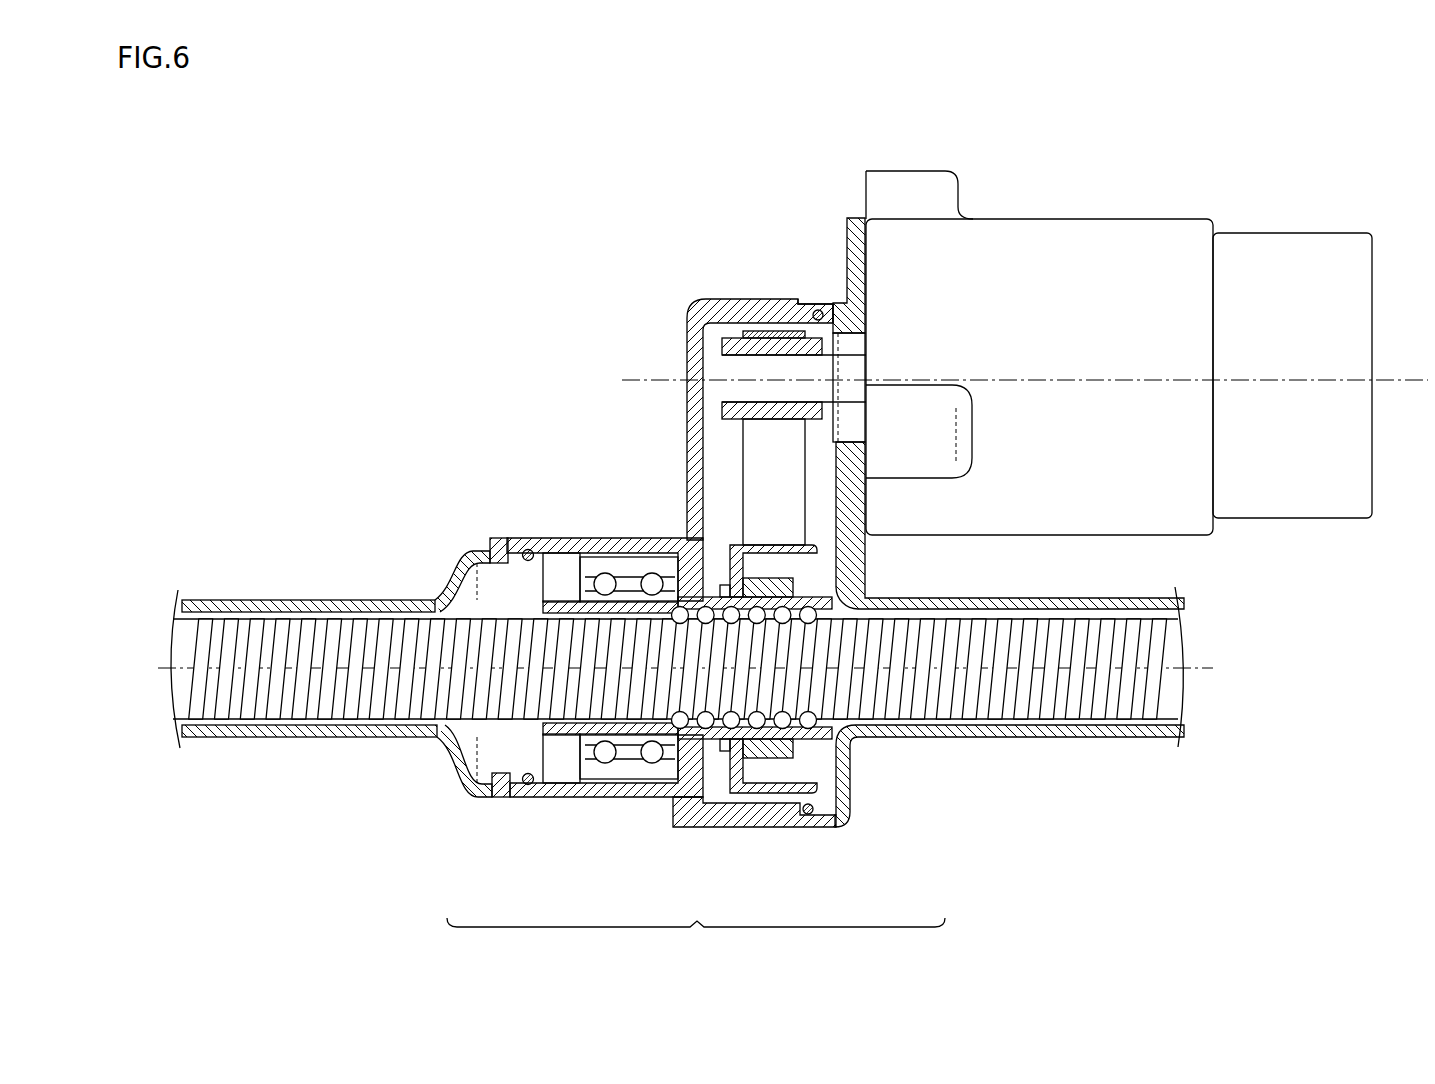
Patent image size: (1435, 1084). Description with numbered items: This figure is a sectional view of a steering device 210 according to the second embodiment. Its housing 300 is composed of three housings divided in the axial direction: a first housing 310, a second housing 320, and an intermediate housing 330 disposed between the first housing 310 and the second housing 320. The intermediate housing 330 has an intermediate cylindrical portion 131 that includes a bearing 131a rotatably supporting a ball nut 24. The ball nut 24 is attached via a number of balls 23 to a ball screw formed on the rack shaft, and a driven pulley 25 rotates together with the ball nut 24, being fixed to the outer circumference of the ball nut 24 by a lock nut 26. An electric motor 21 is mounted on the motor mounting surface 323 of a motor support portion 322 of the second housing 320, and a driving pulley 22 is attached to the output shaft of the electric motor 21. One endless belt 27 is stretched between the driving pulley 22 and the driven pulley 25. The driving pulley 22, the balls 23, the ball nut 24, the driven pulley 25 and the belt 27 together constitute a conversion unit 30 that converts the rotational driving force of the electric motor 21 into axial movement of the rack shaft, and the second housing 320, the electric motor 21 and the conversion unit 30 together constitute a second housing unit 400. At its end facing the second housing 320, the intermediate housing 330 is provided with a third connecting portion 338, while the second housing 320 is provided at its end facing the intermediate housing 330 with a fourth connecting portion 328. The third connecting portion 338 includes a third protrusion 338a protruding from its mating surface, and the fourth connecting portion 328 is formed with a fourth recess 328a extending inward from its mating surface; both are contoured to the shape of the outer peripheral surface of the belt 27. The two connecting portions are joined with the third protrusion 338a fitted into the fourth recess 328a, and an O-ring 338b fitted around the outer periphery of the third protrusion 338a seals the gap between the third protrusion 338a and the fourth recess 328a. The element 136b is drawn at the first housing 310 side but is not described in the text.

The steering device 210 is at (510, 132).
The electric motor 21 is at (1156, 219).
The driving pulley 22 is at (742, 422).
The balls 23 is at (851, 750).
The ball nut 24 is at (808, 748).
The driven pulley 25 is at (763, 578).
The lock nut 26 is at (770, 606).
The endless belt 27 is at (740, 443).
The conversion unit 30 is at (711, 337).
The intermediate cylindrical portion 131 is at (603, 797).
The bearing 131a is at (658, 797).
The flange block 136b is at (505, 773).
The housing 300 is at (696, 940).
The first housing 310 is at (417, 740).
The second housing 320 is at (950, 738).
The motor support portion 322 is at (852, 218).
The motor mounting surface 323 is at (868, 272).
The fourth connecting portion 328 is at (805, 827).
The fourth recess 328a is at (836, 302).
The intermediate housing 330 is at (713, 828).
The third connecting portion 338 is at (737, 827).
The third protrusion 338a is at (803, 300).
The O-ring 338b is at (813, 303).
The second housing unit 400 is at (956, 838).